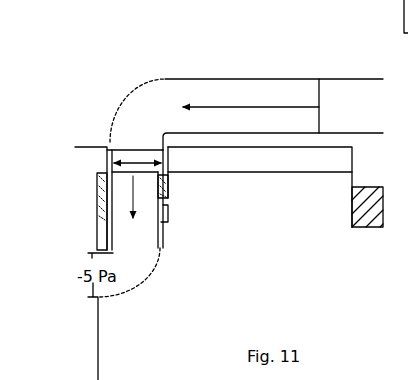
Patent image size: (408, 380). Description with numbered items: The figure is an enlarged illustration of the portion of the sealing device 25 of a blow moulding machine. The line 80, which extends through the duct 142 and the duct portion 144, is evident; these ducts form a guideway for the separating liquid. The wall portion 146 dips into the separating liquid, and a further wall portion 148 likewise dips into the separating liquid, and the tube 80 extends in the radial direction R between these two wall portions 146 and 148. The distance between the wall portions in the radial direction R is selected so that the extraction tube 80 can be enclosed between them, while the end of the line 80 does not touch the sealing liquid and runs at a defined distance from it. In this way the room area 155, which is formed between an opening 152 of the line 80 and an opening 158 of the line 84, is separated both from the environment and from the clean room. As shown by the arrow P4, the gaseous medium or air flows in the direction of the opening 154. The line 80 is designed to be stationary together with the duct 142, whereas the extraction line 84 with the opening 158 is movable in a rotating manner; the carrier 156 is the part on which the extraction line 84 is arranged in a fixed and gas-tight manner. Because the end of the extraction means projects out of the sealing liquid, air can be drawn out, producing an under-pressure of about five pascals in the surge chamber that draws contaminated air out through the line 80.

The extraction line 84 is at (197, 97).
The radial direction R is at (128, 172).
The opening of the extraction line 158 is at (134, 158).
The carrier 156 is at (165, 152).
The room area 155 is at (134, 165).
The opening of the line 152 is at (121, 172).
The wall portion 146 is at (104, 167).
The sealing device 25 is at (92, 197).
The arrow indicating flow direction P4 is at (251, 106).
The duct 142 is at (100, 215).
The further wall portion 148 is at (171, 176).
The duct portion 144 is at (166, 208).
The opening 154 is at (92, 287).
The line 80 is at (130, 250).